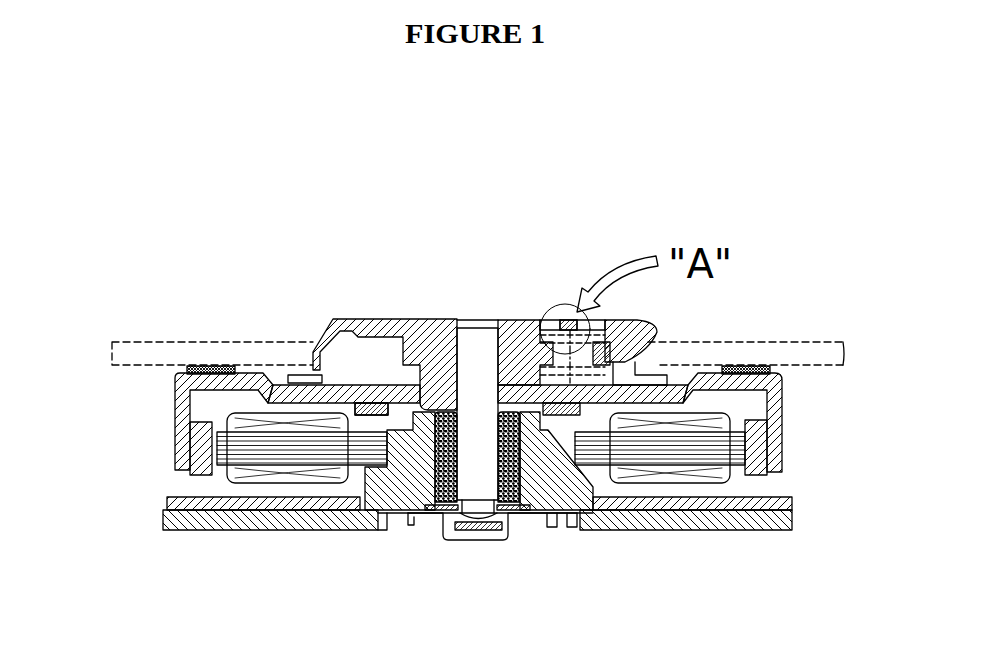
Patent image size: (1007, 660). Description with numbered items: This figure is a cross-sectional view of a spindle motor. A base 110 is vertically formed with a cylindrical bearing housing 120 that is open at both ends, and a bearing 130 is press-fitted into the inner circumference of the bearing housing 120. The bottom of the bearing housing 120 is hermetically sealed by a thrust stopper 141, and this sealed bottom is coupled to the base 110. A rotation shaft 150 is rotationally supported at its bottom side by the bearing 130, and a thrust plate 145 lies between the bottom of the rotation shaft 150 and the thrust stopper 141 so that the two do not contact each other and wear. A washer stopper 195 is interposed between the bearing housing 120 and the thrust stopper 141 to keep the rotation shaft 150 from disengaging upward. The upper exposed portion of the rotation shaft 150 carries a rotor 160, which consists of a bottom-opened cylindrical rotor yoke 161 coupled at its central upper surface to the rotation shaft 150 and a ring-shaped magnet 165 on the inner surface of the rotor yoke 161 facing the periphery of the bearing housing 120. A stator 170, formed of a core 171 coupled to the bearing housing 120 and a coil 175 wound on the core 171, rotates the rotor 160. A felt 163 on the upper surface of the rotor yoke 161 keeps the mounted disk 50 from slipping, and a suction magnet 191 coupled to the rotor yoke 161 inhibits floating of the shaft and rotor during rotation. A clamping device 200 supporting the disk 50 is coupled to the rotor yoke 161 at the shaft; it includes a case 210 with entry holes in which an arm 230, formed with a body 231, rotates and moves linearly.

The disk 50 is at (188, 355).
The base 110 is at (233, 520).
The bearing housing 120 is at (397, 490).
The bearing 130 is at (443, 427).
The thrust stopper 141 is at (480, 530).
The thrust plate 145 is at (460, 527).
The rotation shaft 150 is at (477, 353).
The rotor 160 is at (80, 393).
The rotor yoke 161 is at (182, 407).
The felt 163 is at (742, 370).
The magnet 165 is at (197, 448).
The stator 170 is at (867, 397).
The core 171 is at (735, 443).
The coil 175 is at (765, 417).
The suction magnet 191 is at (360, 412).
The washer stopper 195 is at (518, 513).
The clamping device 200 is at (605, 150).
The case 210 is at (518, 327).
The arm 230 is at (800, 275).
The body 231 is at (643, 327).